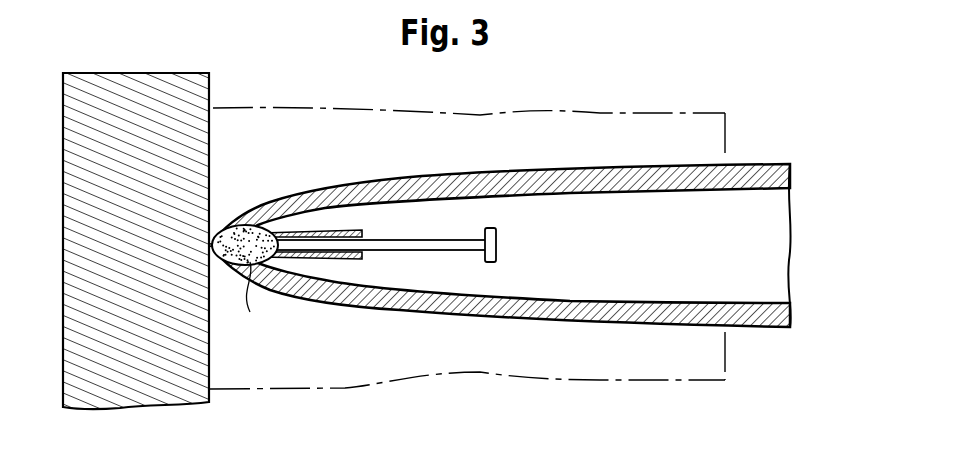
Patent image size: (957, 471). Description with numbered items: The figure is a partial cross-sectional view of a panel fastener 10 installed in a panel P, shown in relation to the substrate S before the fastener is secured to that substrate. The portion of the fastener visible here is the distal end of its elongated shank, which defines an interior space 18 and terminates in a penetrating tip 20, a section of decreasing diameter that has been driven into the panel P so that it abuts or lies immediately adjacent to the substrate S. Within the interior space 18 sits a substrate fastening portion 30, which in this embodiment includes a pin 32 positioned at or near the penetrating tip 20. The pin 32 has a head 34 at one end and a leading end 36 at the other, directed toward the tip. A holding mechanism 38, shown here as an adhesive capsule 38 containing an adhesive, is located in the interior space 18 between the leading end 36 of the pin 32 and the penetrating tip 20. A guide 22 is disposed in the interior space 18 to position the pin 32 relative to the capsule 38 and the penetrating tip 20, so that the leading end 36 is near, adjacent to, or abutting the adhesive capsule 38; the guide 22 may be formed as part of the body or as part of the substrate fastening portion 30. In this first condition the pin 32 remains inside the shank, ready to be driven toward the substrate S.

The panel fastener 10 is at (535, 262).
The interior space 18 is at (778, 210).
The penetrating tip 20 is at (232, 220).
The guide 22 is at (312, 230).
The substrate fastening portion 30 is at (416, 241).
The pin 32 is at (433, 255).
The head 34 is at (497, 243).
The leading end 36 is at (295, 246).
The holding mechanism / adhesive capsule 38 is at (243, 301).
The substrate S is at (209, 85).
The panel P is at (357, 400).